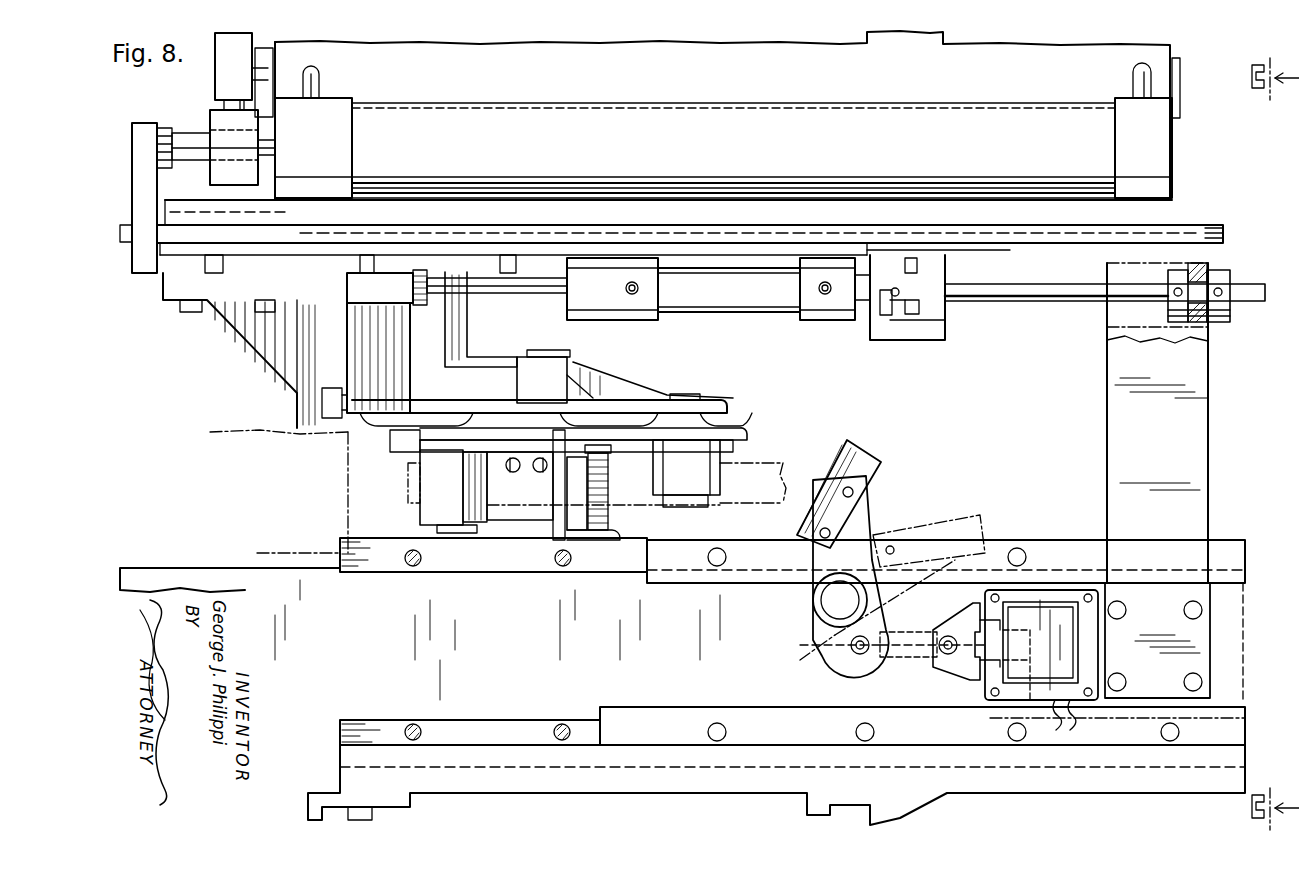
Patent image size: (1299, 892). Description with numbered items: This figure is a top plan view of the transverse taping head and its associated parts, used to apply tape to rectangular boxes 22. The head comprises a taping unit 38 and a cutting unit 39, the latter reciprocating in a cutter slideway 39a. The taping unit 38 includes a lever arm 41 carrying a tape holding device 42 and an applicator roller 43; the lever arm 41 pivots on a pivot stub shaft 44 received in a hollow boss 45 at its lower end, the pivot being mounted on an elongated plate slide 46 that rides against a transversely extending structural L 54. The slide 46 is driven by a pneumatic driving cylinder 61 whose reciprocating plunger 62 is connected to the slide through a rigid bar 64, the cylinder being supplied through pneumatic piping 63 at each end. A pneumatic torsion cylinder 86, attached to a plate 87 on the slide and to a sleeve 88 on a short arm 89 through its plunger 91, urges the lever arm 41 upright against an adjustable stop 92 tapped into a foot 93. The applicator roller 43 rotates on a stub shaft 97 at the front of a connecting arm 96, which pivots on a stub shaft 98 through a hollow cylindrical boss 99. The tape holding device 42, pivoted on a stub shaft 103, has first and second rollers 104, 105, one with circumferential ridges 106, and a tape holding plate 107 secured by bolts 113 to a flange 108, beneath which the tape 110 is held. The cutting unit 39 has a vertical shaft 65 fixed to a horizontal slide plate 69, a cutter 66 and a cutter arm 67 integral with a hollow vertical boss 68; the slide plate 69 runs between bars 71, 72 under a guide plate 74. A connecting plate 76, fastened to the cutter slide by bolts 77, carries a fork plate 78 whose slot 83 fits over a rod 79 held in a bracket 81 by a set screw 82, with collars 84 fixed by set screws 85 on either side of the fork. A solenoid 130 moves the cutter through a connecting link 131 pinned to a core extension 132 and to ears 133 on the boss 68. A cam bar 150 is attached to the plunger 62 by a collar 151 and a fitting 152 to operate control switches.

The rectangular box 22 is at (286, 503).
The taping unit 38 is at (625, 372).
The cutting unit 39 is at (953, 602).
The cutter slideway 39a is at (1060, 540).
The lever arm 41 is at (490, 400).
The tape holding device 42 is at (530, 528).
The applicator roller 43 is at (422, 512).
The pivot stub shaft 44 is at (403, 450).
The hollow boss 45 is at (455, 320).
The plate slide 46 is at (160, 235).
The structural L 54 is at (1160, 213).
The pneumatic driving cylinder 61 is at (740, 145).
The reciprocating plunger 62 is at (186, 134).
The pneumatic piping 63 is at (320, 78).
The rigid bar 64 is at (142, 127).
The vertical shaft 65 is at (830, 604).
The cutter 66 is at (860, 465).
The cutter arm 67 is at (872, 500).
The hollow vertical boss 68 is at (818, 622).
The horizontal slide plate 69 is at (670, 645).
The bar 71 is at (385, 730).
The bar 72 is at (392, 560).
The guide plate 74 is at (757, 565).
The connecting plate 76 is at (1170, 431).
The bolts 77 is at (1185, 608).
The fork plate 78 is at (1208, 336).
The rod 79 is at (1048, 300).
The bracket 81 is at (885, 318).
The set screw 82 is at (896, 298).
The slot 83 is at (1178, 296).
The collars 84 is at (1170, 275).
The set screws 85 is at (1222, 292).
The pneumatic torsion cylinder 86 is at (745, 295).
The plate 87 is at (905, 272).
The sleeve 88 is at (393, 280).
The short arm 89 is at (352, 338).
The plunger 91 is at (540, 290).
The adjustable stop 92 is at (338, 420).
The foot 93 is at (300, 405).
The connecting arm 96 is at (645, 402).
The stub shaft 97 is at (462, 533).
The stub shaft 98 is at (697, 508).
The hollow cylindrical boss 99 is at (722, 455).
The stub shaft 103 is at (552, 352).
The first roller 104 is at (618, 538).
The second roller 105 is at (580, 530).
The circumferential ridges 106 is at (608, 490).
The tape holding plate 107 is at (508, 525).
The flange 108 is at (522, 440).
The tape 110 is at (748, 498).
The bolts 113 is at (540, 473).
The solenoid 130 is at (1047, 632).
The connecting link 131 is at (918, 640).
The extension of the solenoid core 132 is at (962, 665).
The ears 133 is at (848, 660).
The cam bar 150 is at (268, 55).
The collar 151 is at (212, 178).
The fitting 152 is at (240, 66).